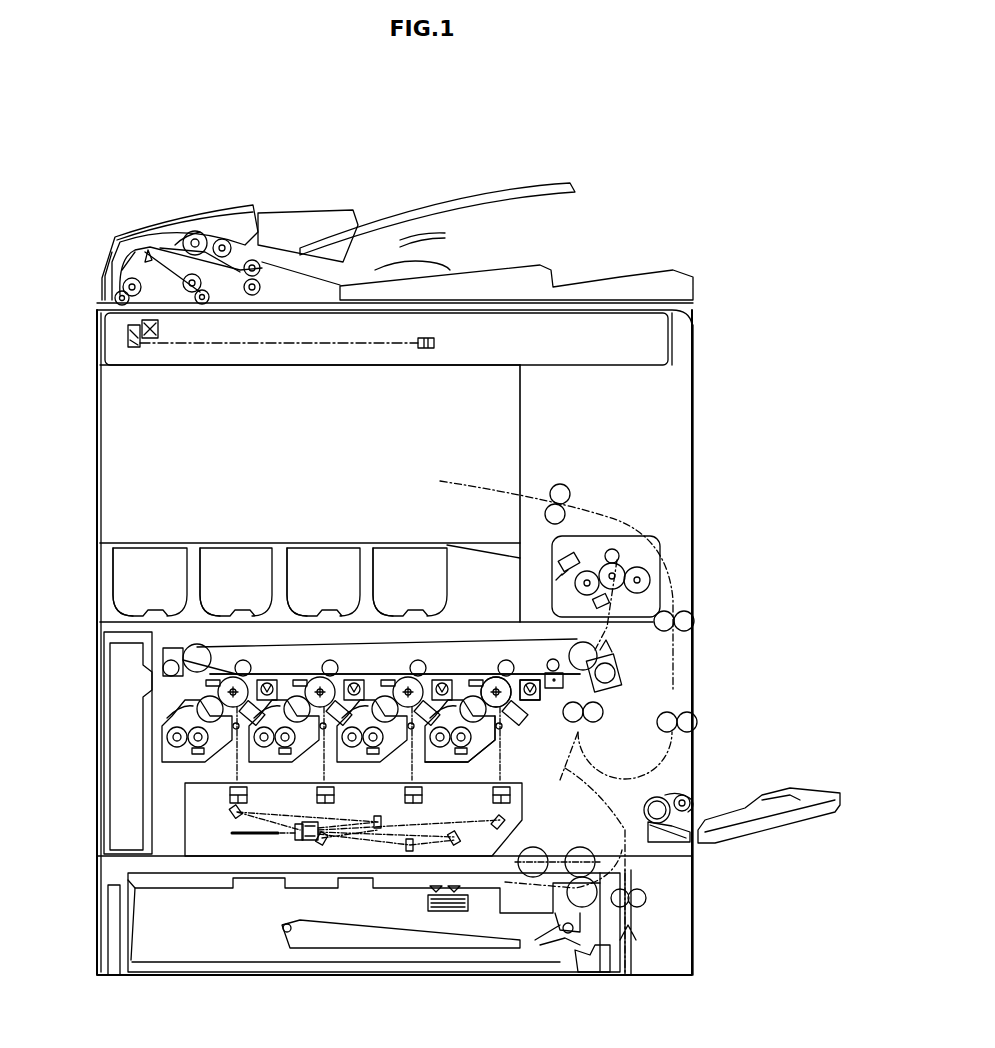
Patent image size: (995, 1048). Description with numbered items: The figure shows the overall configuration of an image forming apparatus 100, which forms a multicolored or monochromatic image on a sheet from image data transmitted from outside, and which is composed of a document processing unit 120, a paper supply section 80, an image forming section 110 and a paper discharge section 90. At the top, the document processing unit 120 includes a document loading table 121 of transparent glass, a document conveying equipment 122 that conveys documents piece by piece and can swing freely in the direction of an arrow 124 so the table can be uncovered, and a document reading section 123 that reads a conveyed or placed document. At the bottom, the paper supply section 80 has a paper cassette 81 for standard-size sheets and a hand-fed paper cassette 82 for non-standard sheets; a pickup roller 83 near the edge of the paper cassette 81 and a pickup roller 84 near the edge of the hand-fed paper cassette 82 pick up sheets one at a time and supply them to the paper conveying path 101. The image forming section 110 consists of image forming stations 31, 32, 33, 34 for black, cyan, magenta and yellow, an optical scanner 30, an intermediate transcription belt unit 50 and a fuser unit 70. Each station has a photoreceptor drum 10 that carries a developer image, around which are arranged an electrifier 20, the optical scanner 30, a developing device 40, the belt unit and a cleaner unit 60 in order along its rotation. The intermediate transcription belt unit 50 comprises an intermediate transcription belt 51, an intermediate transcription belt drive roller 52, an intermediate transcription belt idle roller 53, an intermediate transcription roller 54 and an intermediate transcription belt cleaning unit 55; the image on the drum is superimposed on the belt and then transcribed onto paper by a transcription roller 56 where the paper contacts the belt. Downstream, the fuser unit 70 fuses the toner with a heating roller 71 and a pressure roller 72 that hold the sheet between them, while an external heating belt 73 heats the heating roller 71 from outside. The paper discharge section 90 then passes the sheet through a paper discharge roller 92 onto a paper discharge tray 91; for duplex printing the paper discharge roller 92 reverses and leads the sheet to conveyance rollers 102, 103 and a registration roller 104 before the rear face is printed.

The image forming apparatus 100 is at (667, 180).
The document processing unit 120 is at (218, 200).
The document loading table 121 is at (510, 312).
The document conveying equipment 122 is at (107, 224).
The document reading section 123 is at (660, 345).
The arrow 124 is at (408, 143).
The paper discharge section 90 is at (212, 468).
The paper discharge tray 91 is at (313, 542).
The paper discharge roller 92 is at (563, 486).
The image forming station 31 is at (487, 656).
The image forming station 32 is at (393, 660).
The image forming station 33 is at (305, 658).
The image forming station 34 is at (244, 648).
The intermediate transcription belt unit 50 is at (470, 630).
The intermediate transcription belt 51 is at (490, 655).
The intermediate transcription belt drive roller 52 is at (590, 652).
The intermediate transcription belt idle roller 53 is at (200, 655).
The intermediate transcription roller 54 is at (505, 667).
The intermediate transcription belt cleaning unit 55 is at (176, 650).
The transcription roller 56 is at (610, 670).
The photoreceptor drum 10 is at (482, 726).
The electrifier 20 is at (500, 706).
The developing device 40 is at (450, 765).
The cleaner unit 60 is at (536, 702).
The optical scanner 30 is at (528, 806).
The fuser unit 70 is at (663, 553).
The heating roller 71 is at (617, 562).
The pressure roller 72 is at (650, 582).
The external heating belt 73 is at (600, 555).
The paper conveying path 101 is at (580, 764).
The conveyance roller 102 is at (694, 622).
The conveyance roller 103 is at (690, 723).
The registration roller 104 is at (600, 712).
The paper supply section 80 is at (715, 922).
The paper cassette 81 is at (580, 960).
The hand-fed paper cassette 82 is at (785, 790).
The pickup roller 83 is at (535, 856).
The pickup roller 84 is at (690, 803).
The image forming section 110 is at (170, 800).